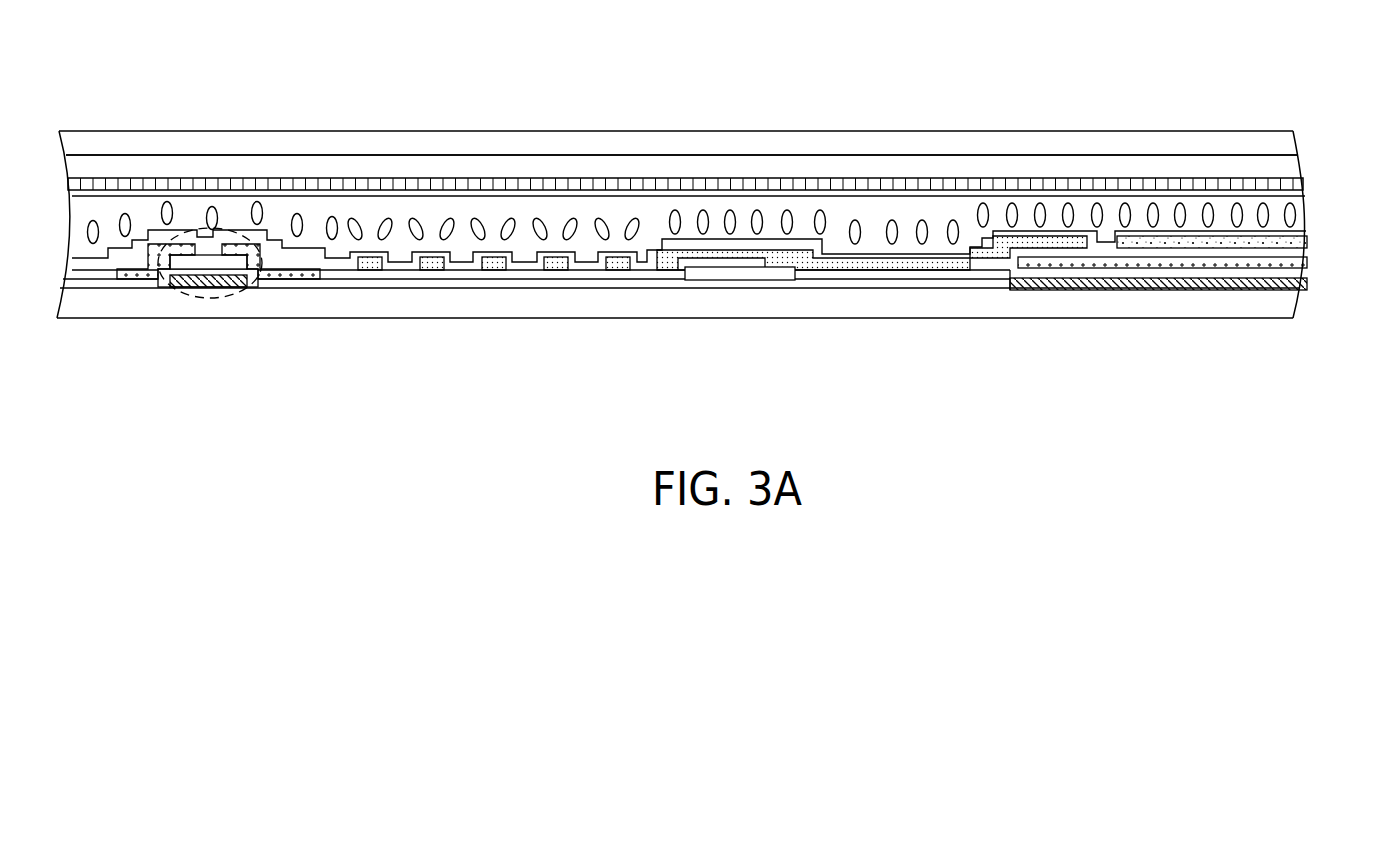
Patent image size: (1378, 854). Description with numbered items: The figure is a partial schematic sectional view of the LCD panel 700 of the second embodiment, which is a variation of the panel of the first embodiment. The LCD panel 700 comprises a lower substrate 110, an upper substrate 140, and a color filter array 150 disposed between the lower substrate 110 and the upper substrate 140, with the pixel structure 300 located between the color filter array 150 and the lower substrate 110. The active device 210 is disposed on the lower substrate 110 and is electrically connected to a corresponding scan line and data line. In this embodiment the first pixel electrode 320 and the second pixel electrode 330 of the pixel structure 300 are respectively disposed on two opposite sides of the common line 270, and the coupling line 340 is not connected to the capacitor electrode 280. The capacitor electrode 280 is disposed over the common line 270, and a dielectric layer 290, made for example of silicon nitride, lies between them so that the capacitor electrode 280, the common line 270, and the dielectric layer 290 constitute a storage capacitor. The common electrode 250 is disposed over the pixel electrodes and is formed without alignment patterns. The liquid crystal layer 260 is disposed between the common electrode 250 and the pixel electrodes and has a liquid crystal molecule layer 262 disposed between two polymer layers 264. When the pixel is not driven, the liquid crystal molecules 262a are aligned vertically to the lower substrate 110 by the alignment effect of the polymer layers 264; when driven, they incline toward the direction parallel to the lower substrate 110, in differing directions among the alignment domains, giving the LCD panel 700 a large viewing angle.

The lower substrate 110 is at (84, 300).
The upper substrate 140 is at (202, 143).
The color filter array 150 is at (162, 167).
The active device 210 is at (208, 298).
The common electrode 250 is at (541, 185).
The liquid crystal layer 260 is at (255, 85).
The liquid crystal molecule layer 262 is at (273, 215).
The liquid crystal molecules 262a is at (442, 222).
The polymer layers 264 is at (330, 193).
The common line 270 is at (1138, 290).
The capacitor electrode 280 is at (1060, 290).
The dielectric layer 290 is at (638, 289).
The pixel structure 300 is at (1318, 178).
The first pixel electrode 320 is at (893, 265).
The second pixel electrode 330 is at (1140, 238).
The coupling line 340 is at (738, 290).
The LCD panel 700 is at (1286, 495).